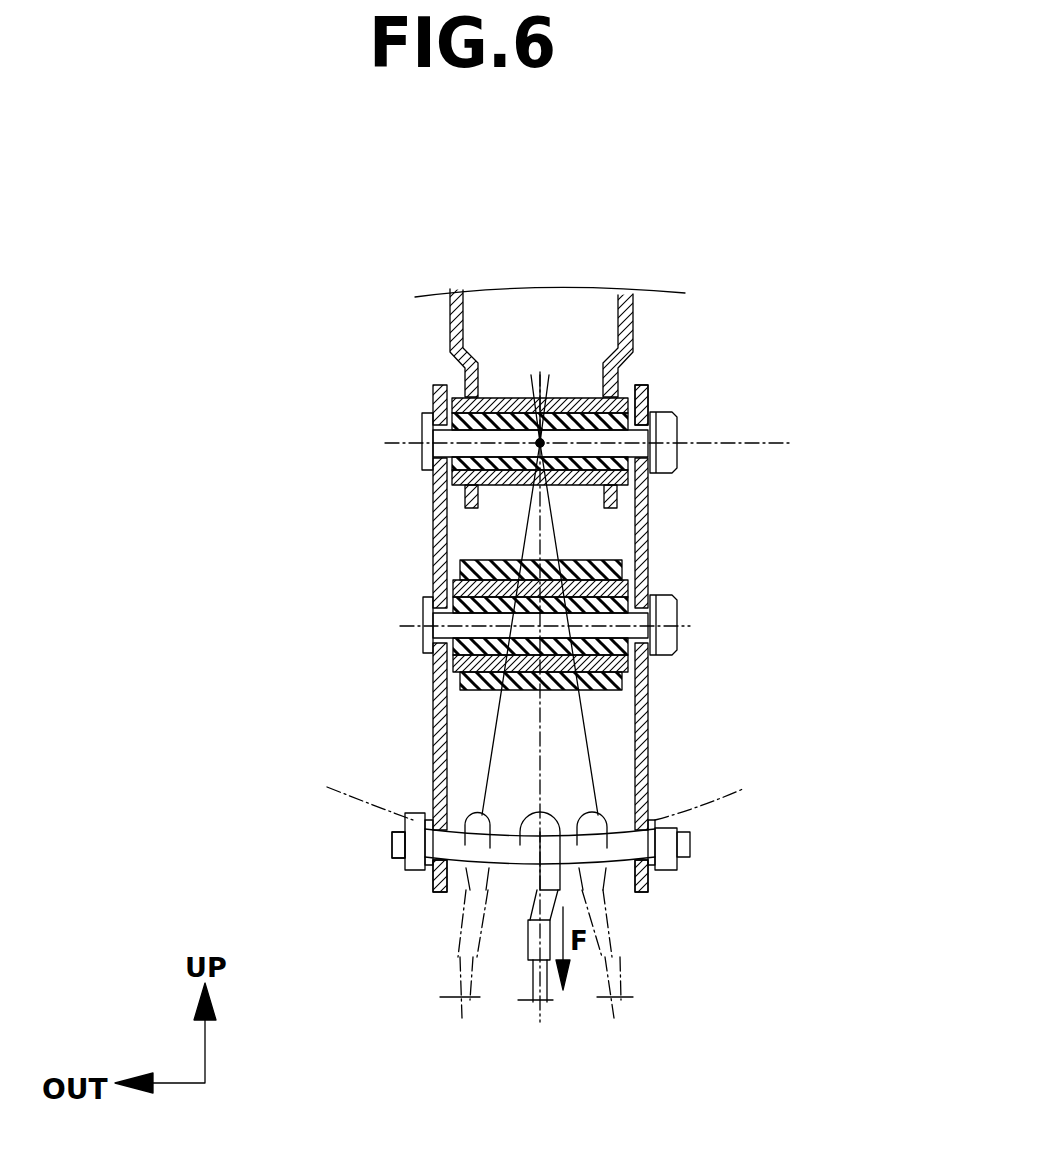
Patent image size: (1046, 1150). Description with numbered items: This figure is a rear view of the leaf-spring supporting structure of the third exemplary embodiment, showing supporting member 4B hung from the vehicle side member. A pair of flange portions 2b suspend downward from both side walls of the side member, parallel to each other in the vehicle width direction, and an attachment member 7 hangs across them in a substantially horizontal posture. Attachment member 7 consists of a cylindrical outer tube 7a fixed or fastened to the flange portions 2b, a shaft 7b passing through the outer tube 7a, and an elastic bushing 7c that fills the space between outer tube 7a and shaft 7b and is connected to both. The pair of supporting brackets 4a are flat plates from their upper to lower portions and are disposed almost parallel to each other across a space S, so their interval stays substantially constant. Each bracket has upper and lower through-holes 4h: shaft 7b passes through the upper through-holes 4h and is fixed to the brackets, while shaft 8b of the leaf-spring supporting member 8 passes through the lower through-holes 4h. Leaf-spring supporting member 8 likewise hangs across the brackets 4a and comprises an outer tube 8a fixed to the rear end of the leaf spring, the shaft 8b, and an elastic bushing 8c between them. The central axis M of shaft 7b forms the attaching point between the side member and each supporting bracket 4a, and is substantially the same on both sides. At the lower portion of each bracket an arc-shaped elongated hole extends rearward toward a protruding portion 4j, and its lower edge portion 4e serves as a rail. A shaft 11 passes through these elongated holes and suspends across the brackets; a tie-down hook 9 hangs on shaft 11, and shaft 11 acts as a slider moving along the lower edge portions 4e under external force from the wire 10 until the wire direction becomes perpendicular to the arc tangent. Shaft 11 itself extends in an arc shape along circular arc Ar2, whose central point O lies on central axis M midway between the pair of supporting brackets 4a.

The flange portions 2b is at (450, 322).
The attachment member 7 is at (457, 397).
The outer tube 7a is at (582, 396).
The shaft 7b is at (445, 431).
The bushing 7c is at (505, 396).
The central point O is at (563, 396).
The supporting member 4B is at (652, 398).
The central axis M is at (605, 435).
The through-holes 4h is at (423, 448).
The supporting brackets 4a is at (435, 524).
The space S is at (478, 537).
The outer tube 8a is at (437, 665).
The shaft 8b is at (677, 620).
The bushing 8c is at (480, 630).
The leaf-spring supporting member 8 is at (645, 672).
The shaft 11 is at (393, 842).
The lower edge portion 4e is at (422, 860).
The protruding portion 4j is at (435, 885).
The circular arc Ar2 is at (745, 790).
The tie-down hook 9 is at (460, 942).
The wire 10 is at (457, 983).